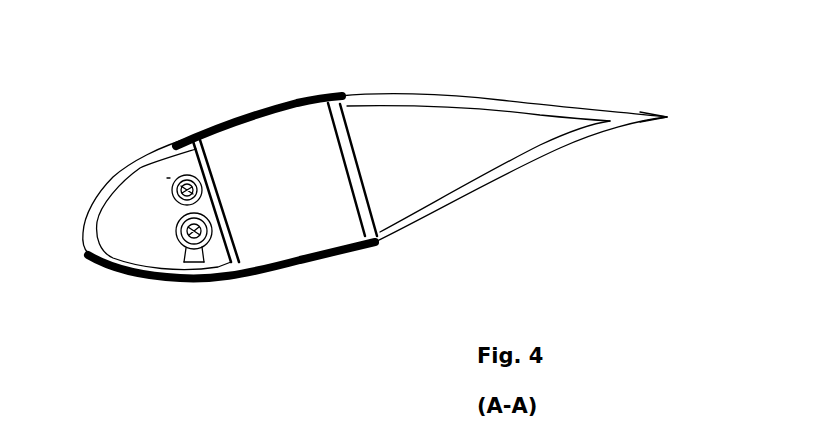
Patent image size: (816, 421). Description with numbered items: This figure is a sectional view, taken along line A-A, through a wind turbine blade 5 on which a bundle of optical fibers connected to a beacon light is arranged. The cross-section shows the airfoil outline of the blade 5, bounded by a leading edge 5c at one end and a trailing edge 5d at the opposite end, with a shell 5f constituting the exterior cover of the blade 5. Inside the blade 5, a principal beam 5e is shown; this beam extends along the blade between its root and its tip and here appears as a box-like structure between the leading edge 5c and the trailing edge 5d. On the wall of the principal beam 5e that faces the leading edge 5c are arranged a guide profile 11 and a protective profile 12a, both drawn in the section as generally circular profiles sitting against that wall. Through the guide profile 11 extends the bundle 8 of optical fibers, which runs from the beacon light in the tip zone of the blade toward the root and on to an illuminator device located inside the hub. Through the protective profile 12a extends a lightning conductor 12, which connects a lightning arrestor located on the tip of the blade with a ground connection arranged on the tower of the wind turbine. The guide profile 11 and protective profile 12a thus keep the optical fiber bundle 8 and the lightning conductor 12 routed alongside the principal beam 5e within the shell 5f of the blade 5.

The wind turbine blade 5 is at (252, 173).
The leading edge 5c is at (90, 251).
The trailing edge 5d is at (663, 110).
The principal beam 5e is at (358, 172).
The shell 5f is at (490, 180).
The bundle of optical fibers 8 is at (174, 180).
The guide profile 11 is at (184, 183).
The lightning conductor 12 is at (201, 251).
The protective profile 12a is at (186, 251).